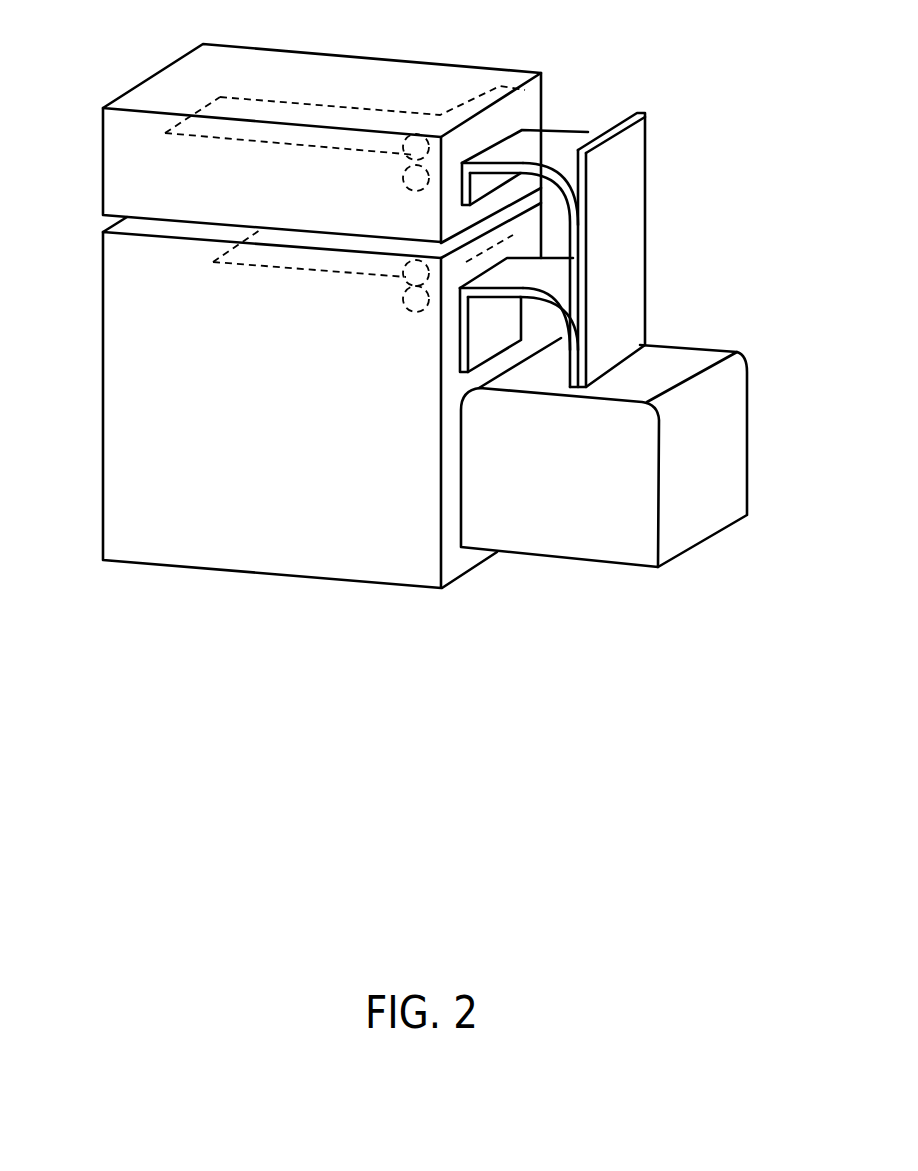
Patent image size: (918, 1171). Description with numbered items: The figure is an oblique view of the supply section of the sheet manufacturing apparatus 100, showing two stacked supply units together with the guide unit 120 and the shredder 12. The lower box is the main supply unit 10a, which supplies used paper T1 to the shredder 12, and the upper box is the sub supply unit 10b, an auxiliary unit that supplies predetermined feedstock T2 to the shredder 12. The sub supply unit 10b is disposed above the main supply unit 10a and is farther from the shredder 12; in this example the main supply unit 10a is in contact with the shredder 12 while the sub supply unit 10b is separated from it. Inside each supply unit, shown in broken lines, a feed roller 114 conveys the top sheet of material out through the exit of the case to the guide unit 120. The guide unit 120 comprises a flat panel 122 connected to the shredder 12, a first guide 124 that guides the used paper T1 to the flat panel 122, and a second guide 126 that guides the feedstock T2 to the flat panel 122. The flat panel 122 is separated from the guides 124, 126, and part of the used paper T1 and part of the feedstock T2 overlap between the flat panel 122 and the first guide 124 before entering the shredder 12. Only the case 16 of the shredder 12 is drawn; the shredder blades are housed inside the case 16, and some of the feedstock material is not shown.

The sheet manufacturing apparatus 100 is at (427, 325).
The guide unit 120 is at (594, 207).
The flat panel 122 is at (640, 232).
The first guide 124 is at (553, 285).
The second guide 126 is at (564, 165).
The feed roller 114 is at (462, 110).
The shredder 12 is at (644, 427).
The case 16 is at (713, 442).
The main supply unit 10a is at (130, 380).
The sub supply unit 10b is at (137, 170).
The used paper T1 is at (213, 254).
The feedstock T2 is at (200, 107).